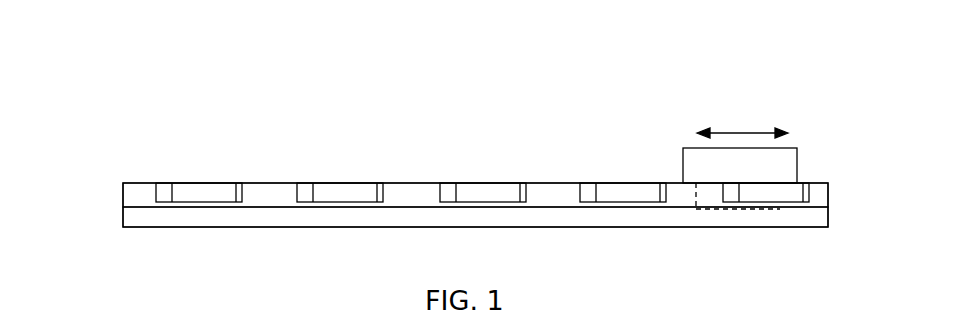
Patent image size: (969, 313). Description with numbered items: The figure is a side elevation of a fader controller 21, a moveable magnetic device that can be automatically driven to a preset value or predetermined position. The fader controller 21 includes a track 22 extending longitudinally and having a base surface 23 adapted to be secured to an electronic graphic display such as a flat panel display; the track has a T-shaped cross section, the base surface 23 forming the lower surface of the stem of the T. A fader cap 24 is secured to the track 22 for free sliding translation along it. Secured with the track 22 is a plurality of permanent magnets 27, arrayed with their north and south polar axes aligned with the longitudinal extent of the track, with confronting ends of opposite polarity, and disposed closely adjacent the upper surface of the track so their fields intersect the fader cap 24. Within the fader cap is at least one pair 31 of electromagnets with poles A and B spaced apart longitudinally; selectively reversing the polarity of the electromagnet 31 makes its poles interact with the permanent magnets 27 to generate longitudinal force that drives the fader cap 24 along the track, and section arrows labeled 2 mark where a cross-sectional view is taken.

The fader controller 21 is at (214, 134).
The track 22 is at (123, 190).
The base surface 23 is at (177, 227).
The fader cap 24 is at (682, 148).
The permanent magnets 27 is at (227, 185).
The pair of electromagnets 31 is at (716, 165).
The section line for FIG. 2 is at (852, 118).